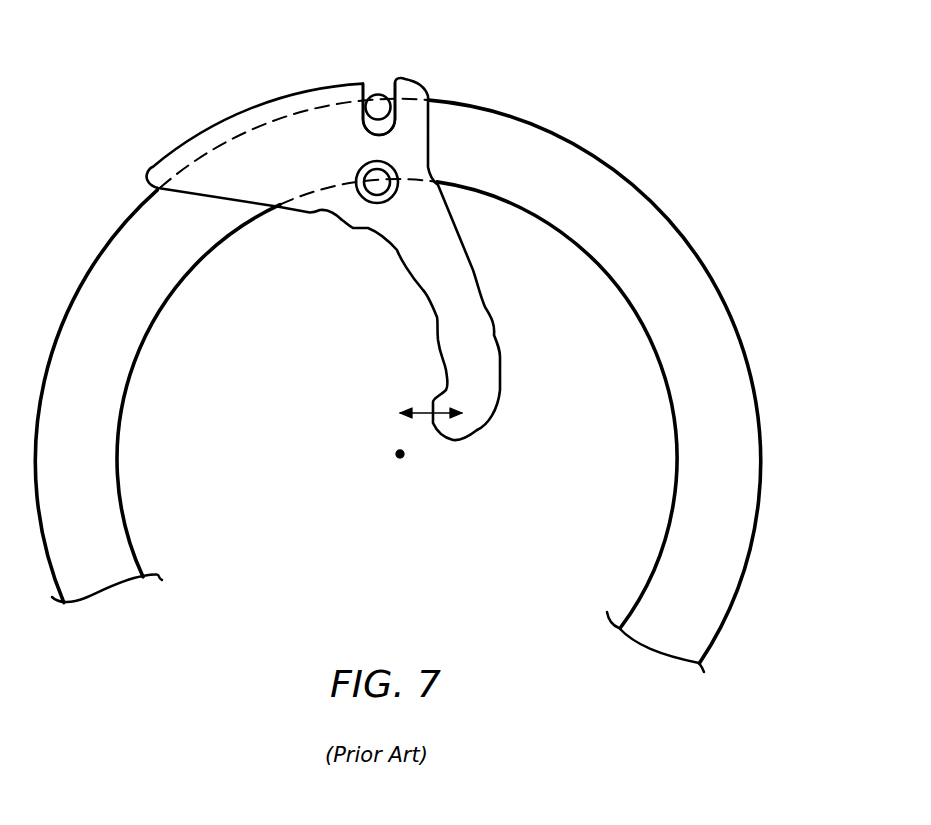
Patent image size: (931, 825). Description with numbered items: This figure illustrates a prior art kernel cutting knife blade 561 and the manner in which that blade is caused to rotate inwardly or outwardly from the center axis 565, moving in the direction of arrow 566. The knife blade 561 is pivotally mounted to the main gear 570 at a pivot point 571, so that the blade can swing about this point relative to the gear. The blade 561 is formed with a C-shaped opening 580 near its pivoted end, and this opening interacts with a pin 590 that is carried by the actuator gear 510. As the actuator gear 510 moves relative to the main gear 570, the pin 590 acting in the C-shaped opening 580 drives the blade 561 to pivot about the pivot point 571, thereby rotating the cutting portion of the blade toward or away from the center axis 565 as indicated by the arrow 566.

The actuator gear 510 is at (752, 360).
The main gear 570 is at (617, 345).
The kernel cutting knife blade 561 is at (480, 398).
The C-shaped opening 580 is at (392, 78).
The pin 590 is at (379, 92).
The pivot point 571 is at (382, 179).
The arrow 566 is at (433, 412).
The center axis 565 is at (397, 455).